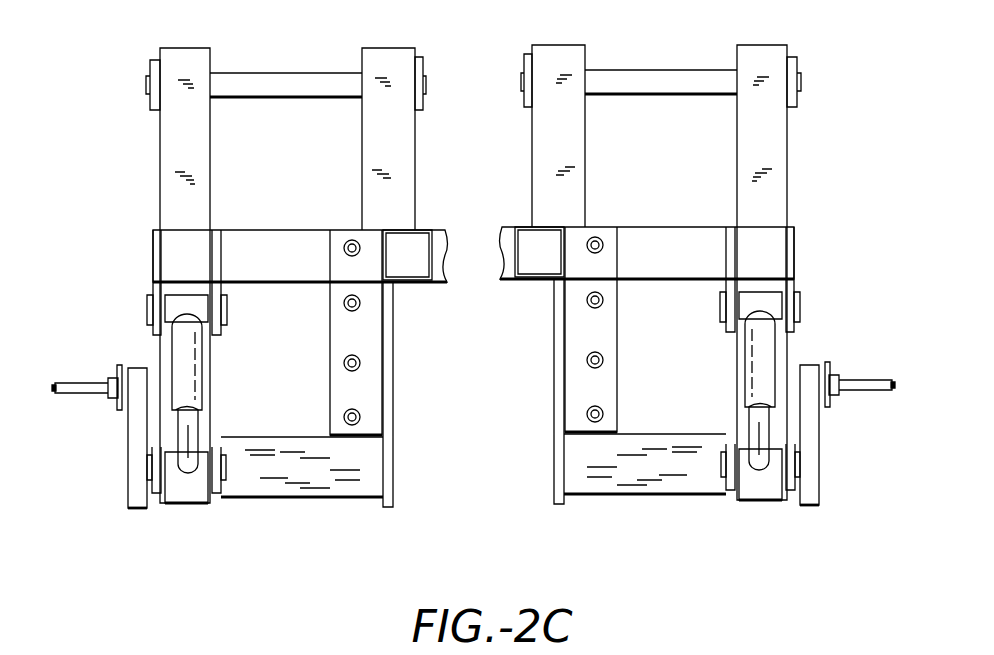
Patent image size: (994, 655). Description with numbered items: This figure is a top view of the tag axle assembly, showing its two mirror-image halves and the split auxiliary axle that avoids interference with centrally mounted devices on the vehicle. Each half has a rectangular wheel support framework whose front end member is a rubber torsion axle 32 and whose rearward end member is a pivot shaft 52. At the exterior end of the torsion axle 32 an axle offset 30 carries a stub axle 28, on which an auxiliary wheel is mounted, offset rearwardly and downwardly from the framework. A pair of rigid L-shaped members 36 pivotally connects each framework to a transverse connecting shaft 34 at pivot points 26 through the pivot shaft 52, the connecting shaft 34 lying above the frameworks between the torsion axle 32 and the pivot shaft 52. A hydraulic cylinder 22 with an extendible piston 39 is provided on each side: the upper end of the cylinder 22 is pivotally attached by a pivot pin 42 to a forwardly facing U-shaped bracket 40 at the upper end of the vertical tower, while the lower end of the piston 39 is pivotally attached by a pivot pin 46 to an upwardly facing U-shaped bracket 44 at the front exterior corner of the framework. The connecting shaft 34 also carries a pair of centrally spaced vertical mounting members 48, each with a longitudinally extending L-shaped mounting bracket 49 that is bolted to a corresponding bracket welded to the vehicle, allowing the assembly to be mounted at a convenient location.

The hydraulic cylinder 22 is at (190, 372).
The pivot point 26 is at (147, 84).
The stub axle 28 is at (75, 385).
The axle offset 30 is at (132, 458).
The rubber torsion axle 32 is at (268, 500).
The transverse connecting shaft 34 is at (284, 230).
The L-shaped member 36 is at (178, 143).
The extendible piston 39 is at (190, 434).
The forwardly facing U-shaped bracket 40 is at (155, 287).
The pivot pin 42 is at (147, 310).
The upwardly facing U-shaped bracket 44 is at (797, 490).
The pivot pin 46 is at (723, 467).
The vertical mounting member 48 is at (415, 282).
The L-shaped mounting bracket 49 is at (330, 332).
The pivot shaft 52 is at (277, 73).